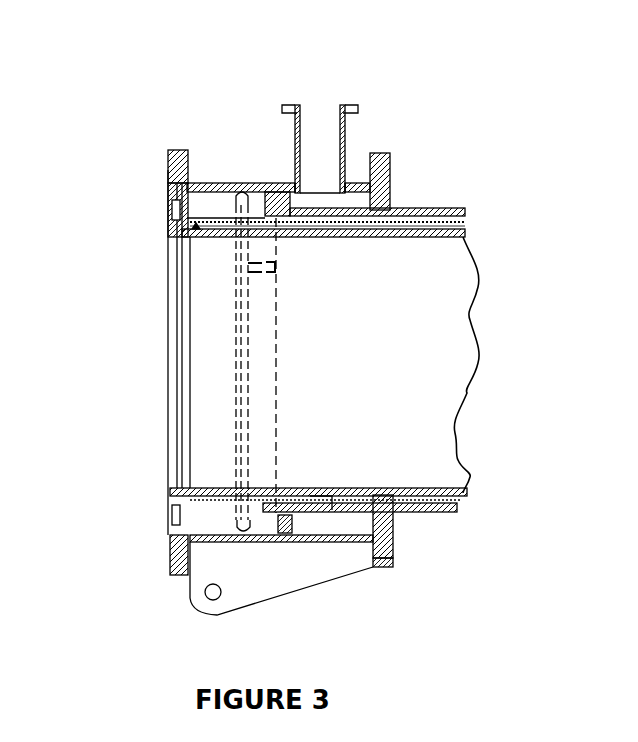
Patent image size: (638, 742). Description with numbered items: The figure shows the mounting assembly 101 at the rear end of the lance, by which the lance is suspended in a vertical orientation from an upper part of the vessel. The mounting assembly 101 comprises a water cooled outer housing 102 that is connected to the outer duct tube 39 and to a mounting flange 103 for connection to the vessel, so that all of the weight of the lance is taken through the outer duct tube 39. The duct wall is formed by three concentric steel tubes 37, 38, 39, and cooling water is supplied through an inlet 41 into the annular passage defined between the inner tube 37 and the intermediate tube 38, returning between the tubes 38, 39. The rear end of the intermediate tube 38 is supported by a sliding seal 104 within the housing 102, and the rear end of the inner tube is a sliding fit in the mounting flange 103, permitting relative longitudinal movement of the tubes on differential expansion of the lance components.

The mounting assembly 101 is at (230, 104).
The water cooled outer housing 102 is at (268, 185).
The mounting flange 103 is at (165, 173).
The sliding seal 104 is at (262, 182).
The inner steel tube 37 is at (463, 232).
The intermediate steel tube 38 is at (463, 225).
The outer steel tube 39 is at (440, 210).
The cooling water inlet 41 is at (330, 115).